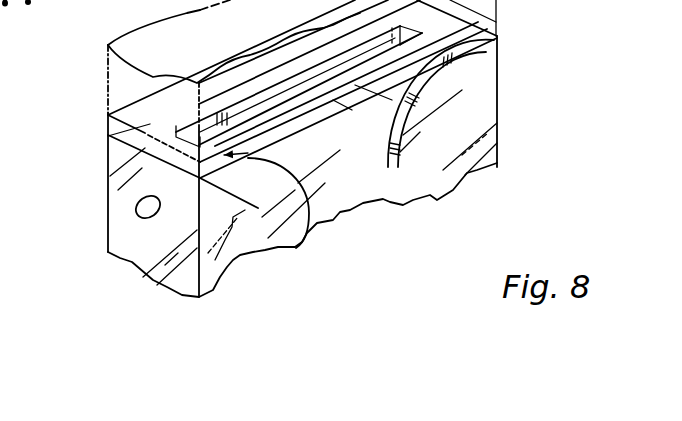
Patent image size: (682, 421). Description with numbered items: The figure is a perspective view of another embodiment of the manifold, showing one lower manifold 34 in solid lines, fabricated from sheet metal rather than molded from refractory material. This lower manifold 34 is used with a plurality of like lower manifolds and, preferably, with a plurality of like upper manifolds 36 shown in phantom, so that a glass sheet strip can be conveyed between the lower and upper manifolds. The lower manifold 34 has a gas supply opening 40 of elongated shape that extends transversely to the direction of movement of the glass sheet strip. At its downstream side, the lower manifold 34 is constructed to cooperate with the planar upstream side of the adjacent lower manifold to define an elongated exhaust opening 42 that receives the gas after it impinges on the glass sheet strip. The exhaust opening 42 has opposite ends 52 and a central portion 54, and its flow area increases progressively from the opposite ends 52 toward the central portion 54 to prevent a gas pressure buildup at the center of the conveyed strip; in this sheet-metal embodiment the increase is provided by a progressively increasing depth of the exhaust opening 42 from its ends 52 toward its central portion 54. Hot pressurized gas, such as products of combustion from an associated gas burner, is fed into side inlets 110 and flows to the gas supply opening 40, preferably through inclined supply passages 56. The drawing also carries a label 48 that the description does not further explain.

The lower manifold 34 is at (260, 190).
The upper manifold 36 is at (108, 97).
The gas supply opening 40 is at (287, 88).
The exhaust opening 42 is at (333, 100).
The top end surface 48 is at (497, 22).
The opposite ends 52 is at (248, 160).
The central portion 54 is at (355, 85).
The supply passage 56 is at (193, 104).
The side inlet 110 is at (148, 218).